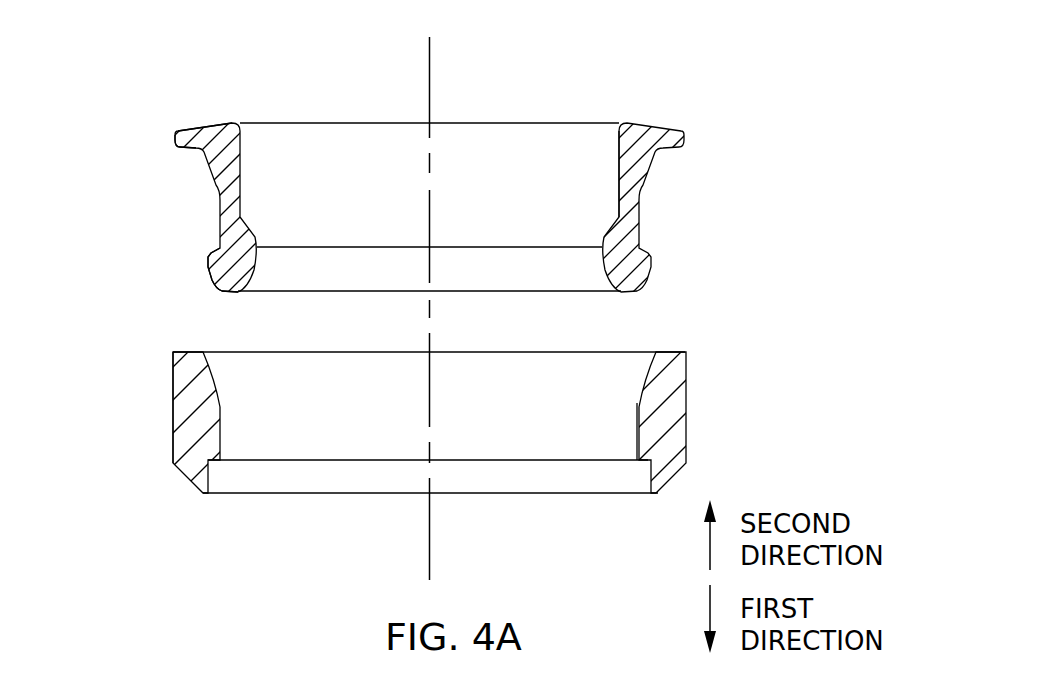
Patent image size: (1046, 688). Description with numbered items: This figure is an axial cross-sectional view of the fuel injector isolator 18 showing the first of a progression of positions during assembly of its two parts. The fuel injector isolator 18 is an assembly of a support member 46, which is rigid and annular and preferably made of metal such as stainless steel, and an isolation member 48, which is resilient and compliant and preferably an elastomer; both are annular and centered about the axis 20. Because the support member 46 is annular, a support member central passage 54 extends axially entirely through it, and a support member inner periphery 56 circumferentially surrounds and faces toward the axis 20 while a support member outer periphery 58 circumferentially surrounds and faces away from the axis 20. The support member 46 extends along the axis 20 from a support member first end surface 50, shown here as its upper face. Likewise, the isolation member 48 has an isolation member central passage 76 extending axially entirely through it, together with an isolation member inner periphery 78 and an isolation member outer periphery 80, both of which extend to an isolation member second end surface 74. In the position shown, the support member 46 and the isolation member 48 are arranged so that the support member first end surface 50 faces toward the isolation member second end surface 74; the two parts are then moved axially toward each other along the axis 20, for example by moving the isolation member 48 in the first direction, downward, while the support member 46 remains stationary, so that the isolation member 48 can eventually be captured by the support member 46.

The fuel injector isolator 18 is at (776, 48).
The axis 20 is at (429, 565).
The support member 46 is at (693, 345).
The isolation member 48 is at (634, 117).
The support member first end surface 50 is at (185, 352).
The support member central passage 54 is at (325, 472).
The support member inner periphery 56 is at (618, 424).
The support member outer periphery 58 is at (155, 407).
The isolation member second end surface 74 is at (220, 294).
The isolation member central passage 76 is at (346, 130).
The isolation member inner periphery 78 is at (600, 185).
The isolation member outer periphery 80 is at (220, 210).